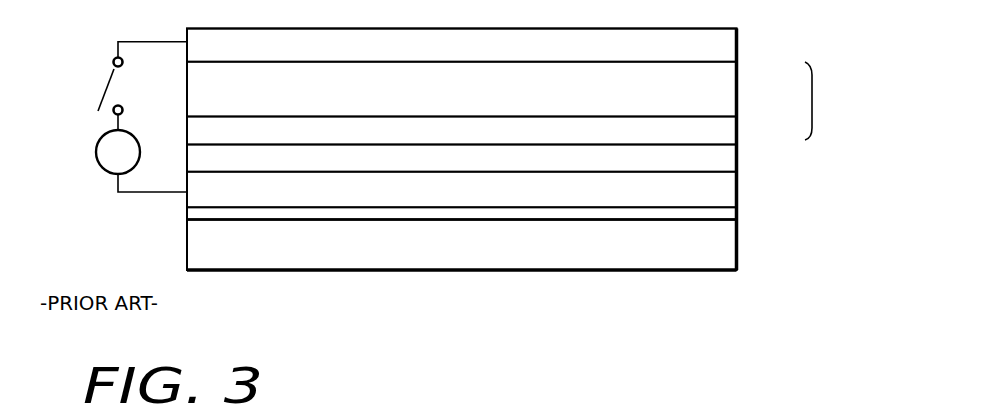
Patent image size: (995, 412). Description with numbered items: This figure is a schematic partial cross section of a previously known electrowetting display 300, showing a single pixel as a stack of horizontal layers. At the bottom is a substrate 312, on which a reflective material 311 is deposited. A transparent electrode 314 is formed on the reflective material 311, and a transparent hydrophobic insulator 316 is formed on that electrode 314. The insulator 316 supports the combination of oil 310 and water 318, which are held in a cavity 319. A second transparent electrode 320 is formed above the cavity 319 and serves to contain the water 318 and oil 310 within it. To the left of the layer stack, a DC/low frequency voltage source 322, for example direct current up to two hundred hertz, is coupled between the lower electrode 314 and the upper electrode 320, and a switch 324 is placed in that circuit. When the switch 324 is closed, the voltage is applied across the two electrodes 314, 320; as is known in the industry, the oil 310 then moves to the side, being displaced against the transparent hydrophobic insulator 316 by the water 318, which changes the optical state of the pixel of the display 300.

The electrowetting display 300 is at (256, 337).
The oil 310 is at (725, 134).
The reflective material 311 is at (727, 214).
The substrate 312 is at (705, 260).
The transparent electrode 314 is at (722, 191).
The transparent hydrophobic insulator 316 is at (725, 162).
The water 318 is at (725, 100).
The cavity 319 is at (829, 101).
The transparent electrode 320 is at (705, 37).
The DC/low frequency voltage source 322 is at (102, 168).
The switch 324 is at (118, 93).